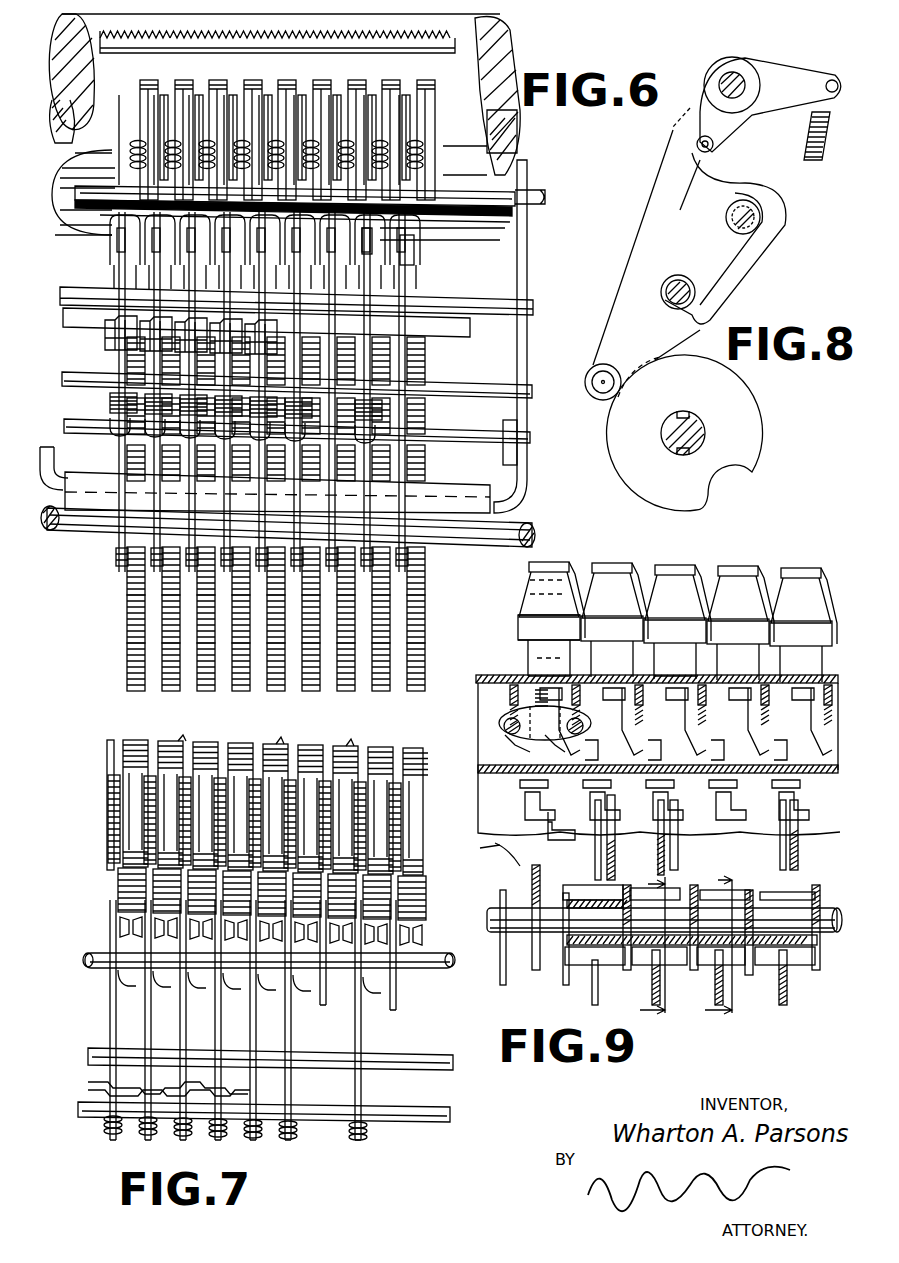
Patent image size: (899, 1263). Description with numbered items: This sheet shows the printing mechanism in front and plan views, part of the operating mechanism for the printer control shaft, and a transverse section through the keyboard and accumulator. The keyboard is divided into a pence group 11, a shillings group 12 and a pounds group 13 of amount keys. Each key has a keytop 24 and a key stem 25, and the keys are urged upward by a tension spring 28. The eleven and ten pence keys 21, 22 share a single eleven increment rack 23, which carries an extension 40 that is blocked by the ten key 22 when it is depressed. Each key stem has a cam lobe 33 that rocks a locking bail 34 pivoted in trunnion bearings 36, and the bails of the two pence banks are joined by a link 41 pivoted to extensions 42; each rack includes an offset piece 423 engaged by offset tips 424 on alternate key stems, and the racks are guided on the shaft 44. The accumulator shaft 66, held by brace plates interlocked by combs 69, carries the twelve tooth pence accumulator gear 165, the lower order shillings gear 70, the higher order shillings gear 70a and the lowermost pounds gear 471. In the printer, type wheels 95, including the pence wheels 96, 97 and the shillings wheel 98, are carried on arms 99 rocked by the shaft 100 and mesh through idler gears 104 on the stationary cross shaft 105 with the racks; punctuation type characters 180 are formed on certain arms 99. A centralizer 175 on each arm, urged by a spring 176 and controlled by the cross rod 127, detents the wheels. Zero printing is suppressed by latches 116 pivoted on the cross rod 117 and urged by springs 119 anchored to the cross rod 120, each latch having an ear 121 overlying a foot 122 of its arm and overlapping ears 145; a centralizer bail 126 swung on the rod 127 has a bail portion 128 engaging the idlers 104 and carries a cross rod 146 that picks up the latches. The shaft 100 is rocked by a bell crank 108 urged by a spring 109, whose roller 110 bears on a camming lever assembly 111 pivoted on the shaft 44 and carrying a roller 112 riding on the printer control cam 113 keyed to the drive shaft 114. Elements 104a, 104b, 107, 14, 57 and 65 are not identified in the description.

In FIG. 6, the type wheels 95 is at (277, 61).
In FIG. 7, the type wheels 95 is at (98, 796).
In FIG. 6, the right-hand pence type wheel 96 is at (425, 80).
In FIG. 7, the right-hand pence type wheel 96 is at (408, 748).
In FIG. 6, the higher order pence type wheel 97 is at (390, 80).
In FIG. 7, the higher order pence type wheel 97 is at (376, 748).
In FIG. 6, the higher order shillings type wheel 98 is at (318, 66).
In FIG. 7, the higher order shillings type wheel 98 is at (312, 747).
In FIG. 6, the carrier arm 99 is at (406, 266).
In FIG. 8, the shaft 100 is at (733, 72).
In FIG. 6, the idler gears 104 is at (117, 641).
In FIG. 6, the rack portion 104a is at (428, 360).
In FIG. 6, the rack portion 104b is at (385, 342).
In FIG. 6, the stationary cross shaft 105 is at (51, 530).
In FIG. 6, the drum end 107 is at (508, 50).
In FIG. 8, the bell crank 108 is at (780, 72).
In FIG. 8, the spring 109 is at (806, 138).
In FIG. 8, the roller 110 is at (706, 152).
In FIG. 8, the camming lever assembly 111 is at (662, 238).
In FIG. 8, the roller 112 is at (590, 370).
In FIG. 8, the printer control cam 113 is at (750, 412).
In FIG. 8, the drive shaft 114 is at (696, 418).
In FIG. 6, the latch 116 is at (367, 313).
In FIG. 7, the latch 116 is at (108, 1022).
In FIG. 6, the cross rod 117 is at (95, 540).
In FIG. 6, the short springs 119 is at (384, 404).
In FIG. 7, the short springs 119 is at (356, 1133).
In FIG. 6, the cross rod 120 is at (486, 392).
In FIG. 7, the cross rod 120 is at (416, 1122).
In FIG. 6, the ear 121 is at (374, 252).
In FIG. 6, the foot 122 is at (365, 265).
In FIG. 6, the centralizer bail 126 is at (522, 463).
In FIG. 6, the stationary cross rod 127 is at (458, 192).
In FIG. 7, the stationary cross rod 127 is at (428, 964).
In FIG. 6, the bail portion 128 is at (455, 492).
In FIG. 6, the overlapping ears 145 is at (106, 347).
In FIG. 7, the overlapping ears 145 is at (88, 1088).
In FIG. 6, the cross rod 146 is at (440, 436).
In FIG. 6, the centralizer 175 is at (293, 206).
In FIG. 7, the centralizer 175 is at (106, 995).
In FIG. 6, the spring 176 is at (422, 158).
In FIG. 7, the spring 176 is at (424, 932).
In FIG. 7, the punctuation type characters 180 is at (183, 735).
In FIG. 8, the shaft 44 is at (686, 284).
In FIG. 9, the pence key group 11 is at (528, 556).
In FIG. 9, the shillings key group 12 is at (685, 560).
In FIG. 9, the pounds key group 13 is at (800, 568).
In FIG. 9, the section line 14 is at (708, 946).
In FIG. 9, the pence key 21 is at (530, 628).
In FIG. 9, the ten pence key 22 is at (520, 645).
In FIG. 9, the eleven increment rack 23 is at (595, 826).
In FIG. 9, the keytop 24 is at (640, 568).
In FIG. 9, the key stem 25 is at (528, 664).
In FIG. 9, the tension spring 28 is at (560, 690).
In FIG. 9, the cam lobe 33 is at (510, 752).
In FIG. 9, the locking bail 34 is at (512, 708).
In FIG. 9, the trunnion bearings 36 is at (510, 692).
In FIG. 9, the extension 40 is at (546, 830).
In FIG. 9, the link 41 is at (500, 718).
In FIG. 9, the extensions 42 is at (504, 728).
In FIG. 9, the post 57 is at (535, 870).
In FIG. 9, the cover 65 is at (508, 864).
In FIG. 9, the accumulator shaft 66 is at (490, 915).
In FIG. 9, the interlocking combs 69 is at (506, 972).
In FIG. 9, the lower order shillings accumulator gear 70 is at (652, 965).
In FIG. 9, the higher order shillings gear 70a is at (718, 965).
In FIG. 9, the pence accumulator gear 165 is at (586, 975).
In FIG. 9, the offset piece 423 is at (616, 830).
In FIG. 9, the offset tips 424 is at (680, 818).
In FIG. 9, the lowermost order pounds accumulator gear 471 is at (772, 962).